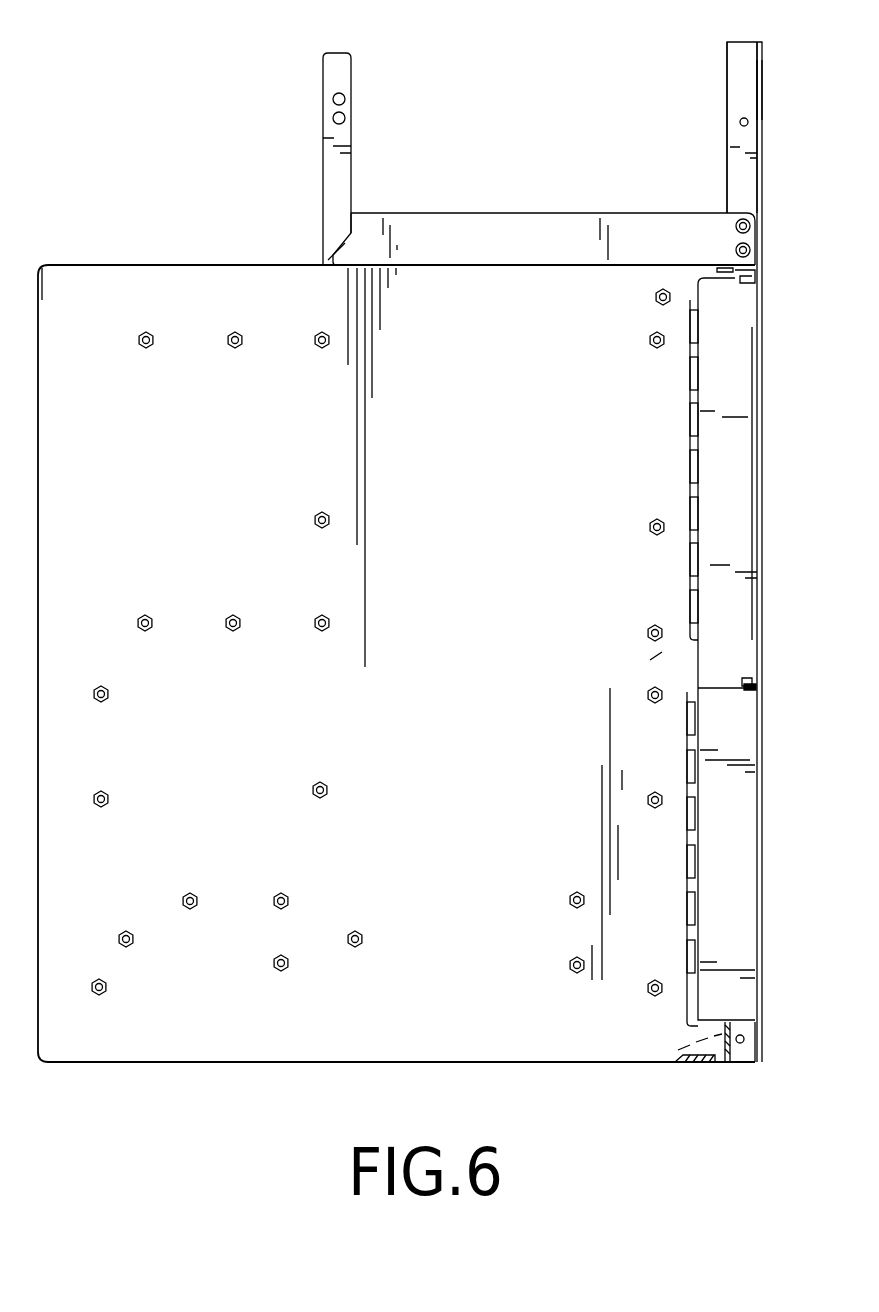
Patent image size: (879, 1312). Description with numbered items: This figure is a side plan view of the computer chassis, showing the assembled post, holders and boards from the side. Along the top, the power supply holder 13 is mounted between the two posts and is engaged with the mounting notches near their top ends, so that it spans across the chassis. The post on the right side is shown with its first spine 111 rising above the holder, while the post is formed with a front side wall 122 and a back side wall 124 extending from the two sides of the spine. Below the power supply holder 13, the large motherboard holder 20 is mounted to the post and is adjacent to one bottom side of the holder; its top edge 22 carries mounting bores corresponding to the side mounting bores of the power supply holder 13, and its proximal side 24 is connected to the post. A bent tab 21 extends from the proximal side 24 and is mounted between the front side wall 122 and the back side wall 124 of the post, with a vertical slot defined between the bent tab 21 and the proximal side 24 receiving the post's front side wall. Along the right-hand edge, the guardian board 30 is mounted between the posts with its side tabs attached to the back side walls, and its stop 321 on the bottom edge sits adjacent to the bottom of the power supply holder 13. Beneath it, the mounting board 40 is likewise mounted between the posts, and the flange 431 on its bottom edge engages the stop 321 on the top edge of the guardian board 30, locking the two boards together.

The power supply holder 13 is at (465, 218).
The motherboard holder 20 is at (243, 272).
The bent tab 21 is at (732, 1063).
The top edge 22 is at (693, 1063).
The proximal side 24 is at (657, 665).
The guardian board 30 is at (728, 430).
The mounting board 40 is at (697, 832).
The first spine 111 is at (737, 78).
The front side wall 122 is at (727, 50).
The back side wall 124 is at (760, 72).
The stop 321 is at (753, 673).
The flange 431 is at (756, 688).